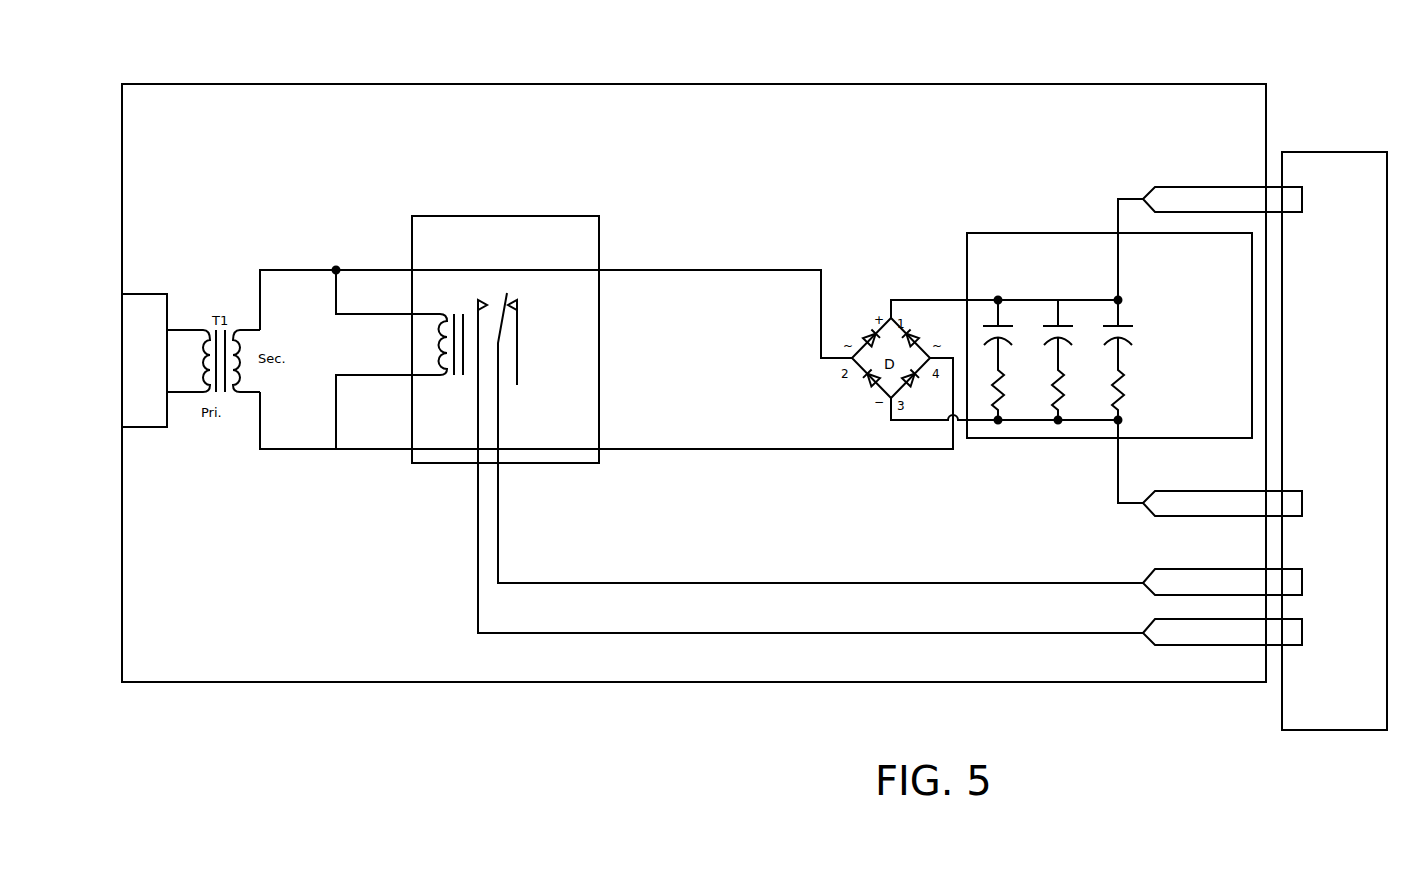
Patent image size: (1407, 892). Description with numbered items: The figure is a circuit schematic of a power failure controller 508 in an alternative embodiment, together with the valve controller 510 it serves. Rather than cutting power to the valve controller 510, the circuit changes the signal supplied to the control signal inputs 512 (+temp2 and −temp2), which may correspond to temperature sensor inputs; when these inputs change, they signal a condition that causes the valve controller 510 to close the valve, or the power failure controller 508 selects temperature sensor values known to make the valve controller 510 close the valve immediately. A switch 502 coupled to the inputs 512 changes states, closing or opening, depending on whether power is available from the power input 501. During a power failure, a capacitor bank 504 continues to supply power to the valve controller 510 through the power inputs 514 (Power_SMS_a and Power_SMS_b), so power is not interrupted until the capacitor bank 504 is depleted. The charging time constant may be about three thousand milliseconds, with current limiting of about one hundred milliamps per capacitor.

The power input 501 is at (150, 293).
The switch 502 is at (599, 226).
The capacitor bank 504 is at (1098, 233).
The power failure controller 508 is at (706, 697).
The valve controller 510 is at (1320, 733).
The control signal input 512 is at (1317, 580).
The power inputs 514 is at (1314, 203).